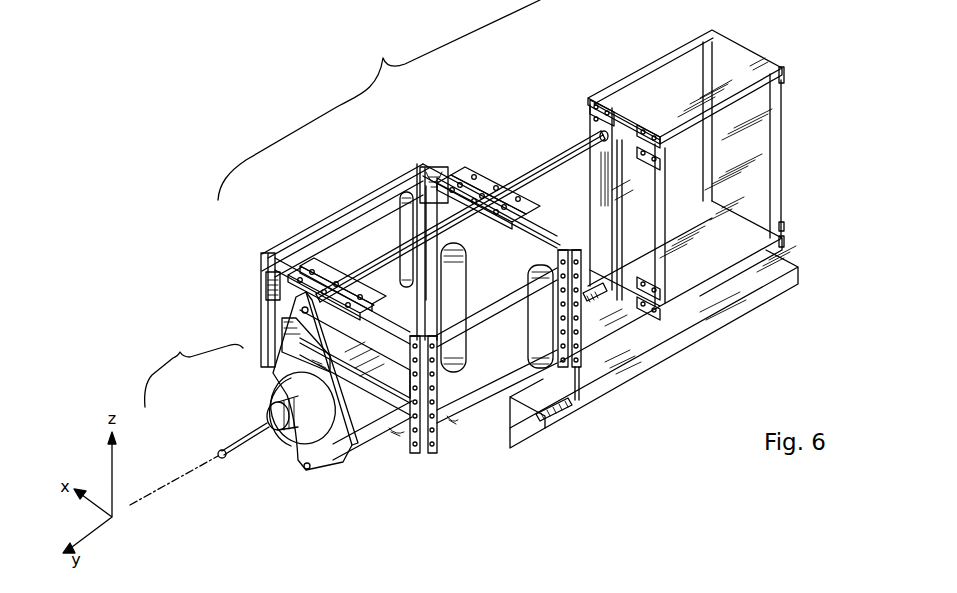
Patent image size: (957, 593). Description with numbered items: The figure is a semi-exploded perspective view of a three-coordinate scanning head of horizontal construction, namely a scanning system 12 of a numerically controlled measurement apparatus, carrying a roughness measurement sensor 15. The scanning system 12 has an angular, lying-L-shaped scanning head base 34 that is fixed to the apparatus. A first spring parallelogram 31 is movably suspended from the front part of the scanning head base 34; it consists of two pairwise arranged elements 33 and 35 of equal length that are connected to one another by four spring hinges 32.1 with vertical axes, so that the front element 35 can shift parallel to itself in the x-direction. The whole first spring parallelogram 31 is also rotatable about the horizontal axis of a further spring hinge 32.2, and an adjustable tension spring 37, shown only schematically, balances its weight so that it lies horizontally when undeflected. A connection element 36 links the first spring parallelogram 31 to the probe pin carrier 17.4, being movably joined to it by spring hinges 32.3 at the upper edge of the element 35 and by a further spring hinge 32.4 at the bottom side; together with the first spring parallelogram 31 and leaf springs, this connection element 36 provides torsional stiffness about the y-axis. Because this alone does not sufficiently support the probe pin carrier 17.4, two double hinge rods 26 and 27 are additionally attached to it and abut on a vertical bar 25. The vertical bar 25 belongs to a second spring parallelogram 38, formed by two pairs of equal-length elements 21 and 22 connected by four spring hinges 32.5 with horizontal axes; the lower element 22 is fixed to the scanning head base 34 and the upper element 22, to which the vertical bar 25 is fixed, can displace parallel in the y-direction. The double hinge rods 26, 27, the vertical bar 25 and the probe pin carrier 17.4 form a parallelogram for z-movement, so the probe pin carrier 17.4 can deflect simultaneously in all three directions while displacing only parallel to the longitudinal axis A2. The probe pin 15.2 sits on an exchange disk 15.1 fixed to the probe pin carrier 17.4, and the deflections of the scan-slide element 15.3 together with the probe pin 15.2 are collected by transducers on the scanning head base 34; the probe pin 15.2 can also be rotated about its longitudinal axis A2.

The scanning system 12 is at (379, 100).
The roughness measurement sensor 15 is at (194, 368).
The disk 15.1 is at (278, 390).
The probe pin 15.2 is at (250, 432).
The scan-slide element 15.3 is at (218, 450).
The probe pin carrier 17.4 is at (302, 452).
The elements of the second spring parallelogram 21 is at (667, 168).
The elements of the second spring parallelogram 22 is at (664, 58).
The vertical bar 25 is at (612, 204).
The double hinge rod 26 is at (565, 156).
The double hinge rod 27 is at (592, 306).
The first spring parallelogram 31 is at (338, 190).
The spring hinges 32.1 is at (418, 164).
The spring hinge 32.2 is at (473, 184).
The spring hinges 32.3 is at (338, 276).
The spring hinge 32.4 is at (370, 368).
The spring hinges 32.5 is at (779, 68).
The elements of the first spring parallelogram 33 is at (330, 218).
The scanning head base 34 is at (633, 368).
The front element 35 is at (444, 163).
The connection element 36 is at (378, 373).
The tension spring 37 is at (566, 417).
The second spring parallelogram 38 is at (608, 72).
The longitudinal axis A2 is at (194, 469).